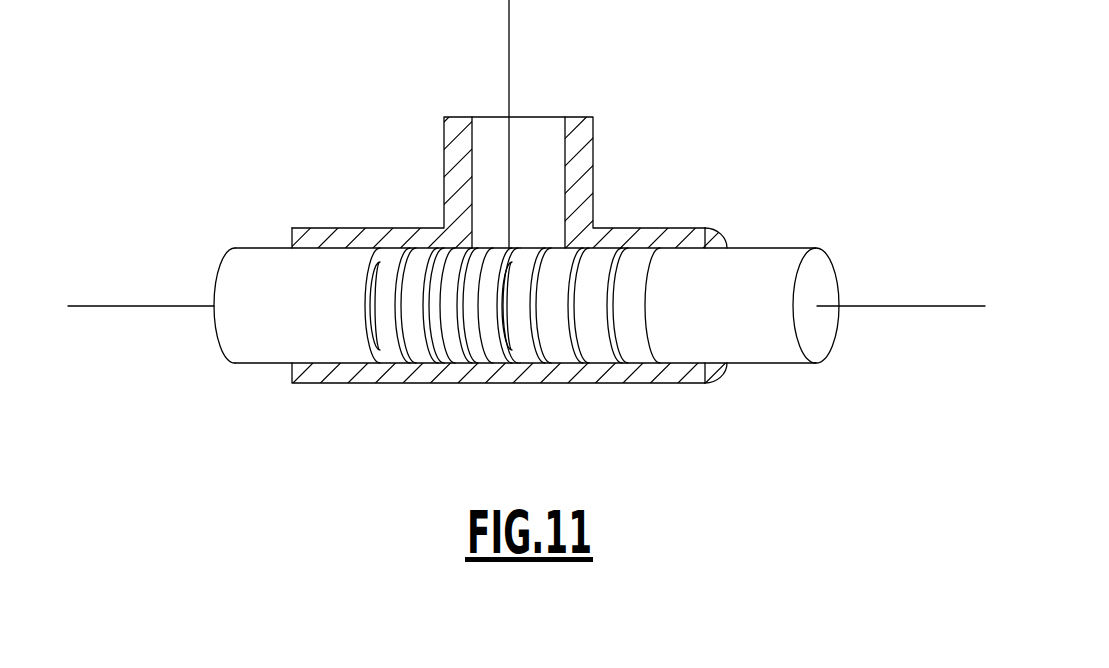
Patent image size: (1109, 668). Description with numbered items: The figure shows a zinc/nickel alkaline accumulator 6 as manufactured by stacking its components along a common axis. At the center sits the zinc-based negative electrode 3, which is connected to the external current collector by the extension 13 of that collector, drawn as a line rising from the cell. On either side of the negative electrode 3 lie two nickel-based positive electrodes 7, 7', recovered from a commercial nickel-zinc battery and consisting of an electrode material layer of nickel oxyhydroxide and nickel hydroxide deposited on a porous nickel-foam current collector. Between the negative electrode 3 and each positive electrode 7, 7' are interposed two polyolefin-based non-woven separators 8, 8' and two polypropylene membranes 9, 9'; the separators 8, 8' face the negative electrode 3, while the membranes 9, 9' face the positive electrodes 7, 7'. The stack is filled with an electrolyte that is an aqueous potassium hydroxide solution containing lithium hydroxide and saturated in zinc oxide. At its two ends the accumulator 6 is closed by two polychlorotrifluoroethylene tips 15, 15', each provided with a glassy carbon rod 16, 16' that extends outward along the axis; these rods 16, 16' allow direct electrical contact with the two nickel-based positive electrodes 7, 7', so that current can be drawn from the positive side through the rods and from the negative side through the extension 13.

The zinc-based negative electrode 3 is at (508, 386).
The zinc/nickel alkaline accumulator 6 is at (790, 130).
The nickel-based positive electrode 7 is at (377, 338).
The nickel-based positive electrode 7' is at (655, 343).
The polyolefin-based non-woven separator 8 is at (469, 365).
The polyolefin-based non-woven separator 8' is at (555, 365).
The polypropylene membrane 9 is at (427, 365).
The polypropylene membrane 9' is at (600, 368).
The extension of the current collector 13 is at (528, 63).
The polychlorotrifluoroethylene tip 15 is at (353, 338).
The polychlorotrifluoroethylene tip 15' is at (679, 377).
The glassy carbon rod 16 is at (141, 377).
The glassy carbon rod 16' is at (901, 370).